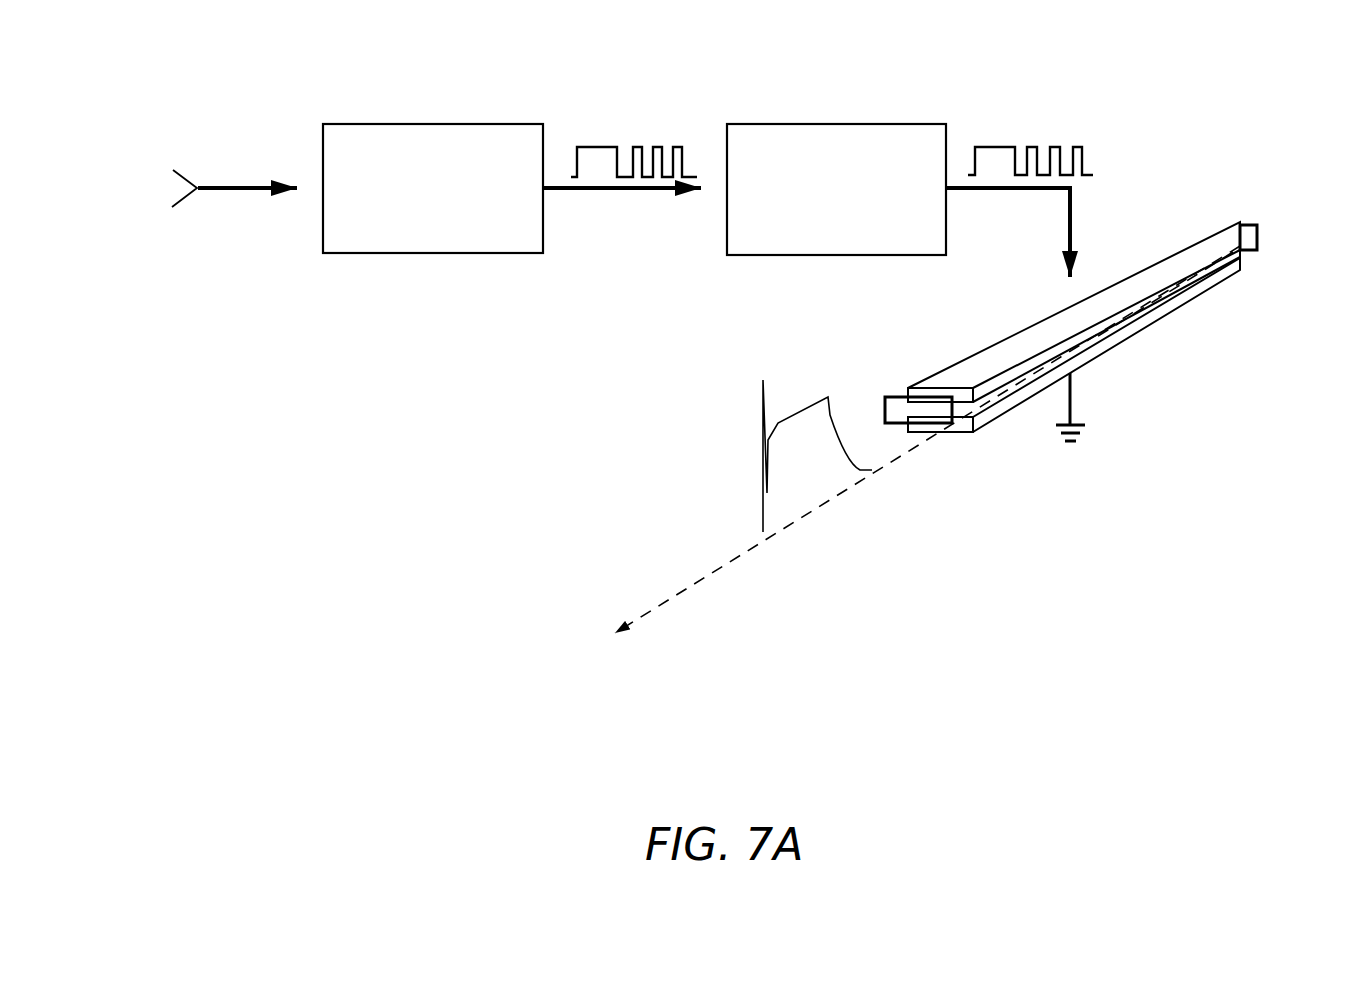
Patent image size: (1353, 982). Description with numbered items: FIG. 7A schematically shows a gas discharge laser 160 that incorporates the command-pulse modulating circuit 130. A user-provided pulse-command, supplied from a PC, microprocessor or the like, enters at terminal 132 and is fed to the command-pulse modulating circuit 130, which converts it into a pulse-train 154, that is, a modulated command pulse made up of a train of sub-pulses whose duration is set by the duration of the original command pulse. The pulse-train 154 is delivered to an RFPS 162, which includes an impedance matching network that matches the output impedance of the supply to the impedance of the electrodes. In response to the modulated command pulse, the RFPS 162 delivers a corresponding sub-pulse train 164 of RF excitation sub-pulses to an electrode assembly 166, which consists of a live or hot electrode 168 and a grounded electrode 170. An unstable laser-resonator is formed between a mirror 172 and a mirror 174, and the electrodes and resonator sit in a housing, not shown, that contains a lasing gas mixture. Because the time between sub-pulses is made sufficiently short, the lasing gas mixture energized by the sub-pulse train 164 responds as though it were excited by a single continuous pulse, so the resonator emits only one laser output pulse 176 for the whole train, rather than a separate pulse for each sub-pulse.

The command-pulse modulating circuit 130 is at (430, 254).
The terminal 132 is at (188, 210).
The pulse-train (modulated command pulse) 154 is at (632, 133).
The gas discharge laser 160 is at (1026, 653).
The RFPS 162 is at (850, 124).
The sub-pulse train 164 is at (1038, 128).
The electrode assembly 166 is at (1158, 347).
The live electrode 168 is at (1173, 232).
The grounded electrode 170 is at (1110, 352).
The mirror 172 is at (1258, 238).
The mirror 174 is at (900, 412).
The laser output pulse 176 is at (793, 400).